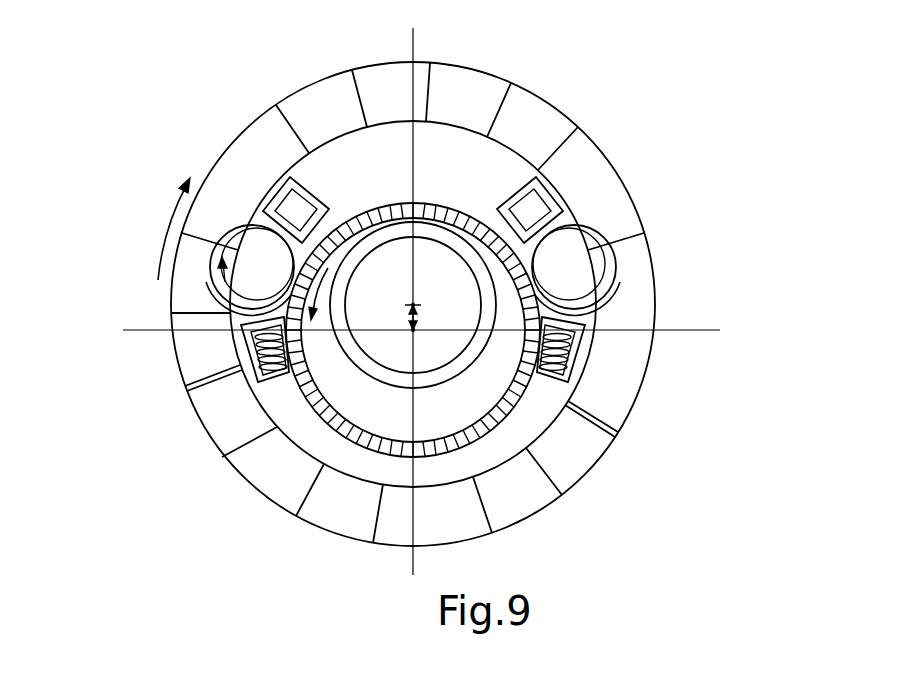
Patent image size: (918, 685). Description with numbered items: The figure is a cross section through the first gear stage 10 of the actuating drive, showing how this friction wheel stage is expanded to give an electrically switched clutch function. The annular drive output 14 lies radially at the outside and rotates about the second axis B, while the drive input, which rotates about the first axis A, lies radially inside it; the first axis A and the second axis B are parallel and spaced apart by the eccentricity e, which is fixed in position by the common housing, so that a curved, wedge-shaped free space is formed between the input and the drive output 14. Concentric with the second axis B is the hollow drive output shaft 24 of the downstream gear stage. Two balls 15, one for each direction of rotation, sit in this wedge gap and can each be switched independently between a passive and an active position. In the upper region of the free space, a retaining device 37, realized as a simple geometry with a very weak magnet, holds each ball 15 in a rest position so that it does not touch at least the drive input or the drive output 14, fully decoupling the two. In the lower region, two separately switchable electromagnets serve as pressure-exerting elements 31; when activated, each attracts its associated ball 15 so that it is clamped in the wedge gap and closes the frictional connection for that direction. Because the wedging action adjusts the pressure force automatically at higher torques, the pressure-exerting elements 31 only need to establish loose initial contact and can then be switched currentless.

The first gear stage 10 is at (527, 81).
The drive output 14 is at (347, 100).
The ball 15 is at (280, 262).
The drive output shaft 24 is at (465, 358).
The pressure-exerting element 31 is at (247, 352).
The retaining device 37 is at (287, 193).
The first axis A is at (413, 330).
The second axis B is at (413, 307).
The eccentricity e is at (421, 316).